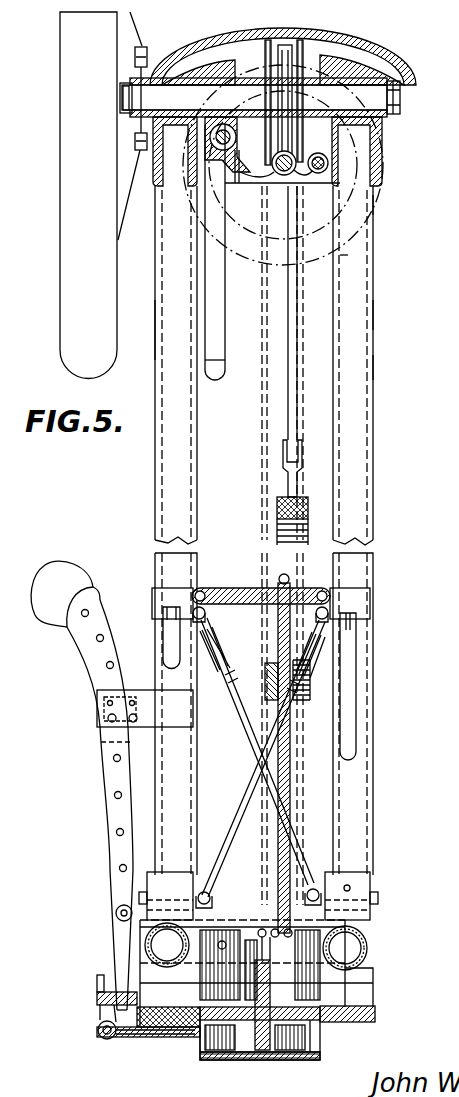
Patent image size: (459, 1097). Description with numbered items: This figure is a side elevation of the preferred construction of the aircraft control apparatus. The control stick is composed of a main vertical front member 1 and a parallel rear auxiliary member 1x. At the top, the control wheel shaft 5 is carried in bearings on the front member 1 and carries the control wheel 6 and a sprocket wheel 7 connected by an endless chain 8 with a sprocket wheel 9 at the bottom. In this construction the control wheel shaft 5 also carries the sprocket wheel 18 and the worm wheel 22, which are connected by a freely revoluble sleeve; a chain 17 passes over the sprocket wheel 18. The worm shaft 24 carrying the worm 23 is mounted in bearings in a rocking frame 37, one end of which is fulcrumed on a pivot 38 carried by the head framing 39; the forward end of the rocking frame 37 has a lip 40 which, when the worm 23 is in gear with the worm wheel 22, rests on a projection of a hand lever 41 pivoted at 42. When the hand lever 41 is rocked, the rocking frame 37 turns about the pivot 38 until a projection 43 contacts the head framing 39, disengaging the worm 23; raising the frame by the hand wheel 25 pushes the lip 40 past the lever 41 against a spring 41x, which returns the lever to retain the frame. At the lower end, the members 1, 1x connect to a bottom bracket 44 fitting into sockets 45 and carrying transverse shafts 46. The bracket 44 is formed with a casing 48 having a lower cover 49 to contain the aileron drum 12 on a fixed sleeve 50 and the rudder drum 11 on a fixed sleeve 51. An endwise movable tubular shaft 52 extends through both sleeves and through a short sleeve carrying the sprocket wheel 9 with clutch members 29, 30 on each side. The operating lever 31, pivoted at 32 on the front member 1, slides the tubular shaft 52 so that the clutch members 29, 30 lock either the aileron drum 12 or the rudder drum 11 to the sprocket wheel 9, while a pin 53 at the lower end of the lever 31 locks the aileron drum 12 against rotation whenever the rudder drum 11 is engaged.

The main vertical front member 1 is at (160, 422).
The rear auxiliary member 1x is at (362, 428).
The control wheel shaft 5 is at (187, 52).
The control wheel 6 is at (100, 37).
The sprocket wheel 7 is at (266, 58).
The endless chain 8 is at (385, 315).
The sprocket wheel 9 is at (313, 1048).
The rudder drum 11 is at (323, 1033).
The aileron drum 12 is at (190, 1046).
The chain 17 is at (386, 367).
The sprocket wheel 18 is at (286, 152).
The worm wheel 22 is at (300, 50).
The worm 23 is at (376, 200).
The worm shaft 24 is at (268, 190).
The hand wheel 25 is at (350, 254).
The clutch member 29 is at (230, 1000).
The clutch member 30 is at (350, 974).
The operating lever 31 is at (110, 803).
The pivot 32 is at (165, 933).
The rocking frame 37 is at (282, 186).
The pivot 38 is at (330, 170).
The head framing 39 is at (391, 75).
The lip 40 is at (247, 176).
The hand lever 41 is at (172, 328).
The spring 41x is at (213, 212).
The pivot 42 is at (213, 140).
The projection 43 is at (324, 176).
The bottom bracket 44 is at (200, 916).
The sockets 45 is at (364, 887).
The transverse shafts 46 is at (362, 936).
The casing 48 is at (250, 928).
The lower cover 49 is at (170, 1040).
The fixed sleeve 50 is at (138, 1026).
The fixed sleeve 51 is at (357, 1023).
The tubular shaft 52 is at (100, 1000).
The pin 53 is at (100, 1022).